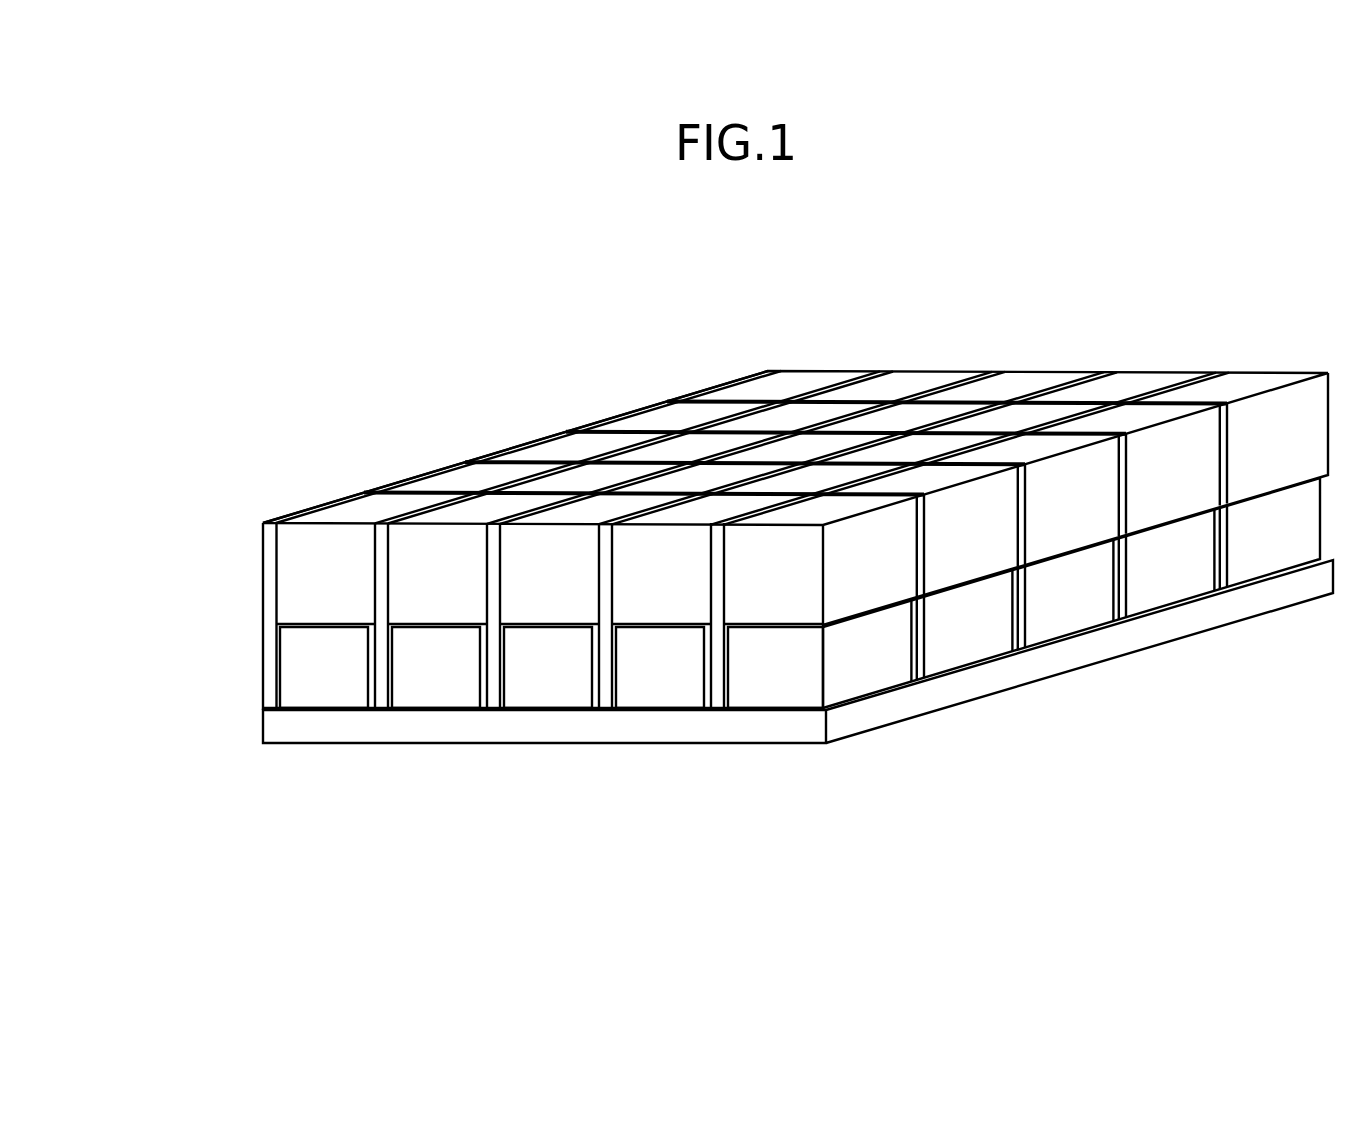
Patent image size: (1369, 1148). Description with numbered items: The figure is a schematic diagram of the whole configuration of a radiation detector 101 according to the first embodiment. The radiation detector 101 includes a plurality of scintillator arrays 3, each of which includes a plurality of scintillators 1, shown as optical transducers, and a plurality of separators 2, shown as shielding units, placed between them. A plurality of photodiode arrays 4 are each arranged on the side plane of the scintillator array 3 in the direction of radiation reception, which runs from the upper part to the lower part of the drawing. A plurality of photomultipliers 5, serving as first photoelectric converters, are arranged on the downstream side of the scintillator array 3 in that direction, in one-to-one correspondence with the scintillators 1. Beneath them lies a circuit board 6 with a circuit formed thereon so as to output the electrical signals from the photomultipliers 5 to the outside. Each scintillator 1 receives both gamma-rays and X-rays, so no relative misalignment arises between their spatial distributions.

The radiation detector 101 is at (1224, 254).
The scintillator 1 is at (350, 515).
The separator 2 is at (438, 493).
The scintillator array 3 is at (826, 360).
The photodiode array 4 is at (267, 553).
The photomultiplier 5 is at (323, 678).
The circuit board 6 is at (610, 728).